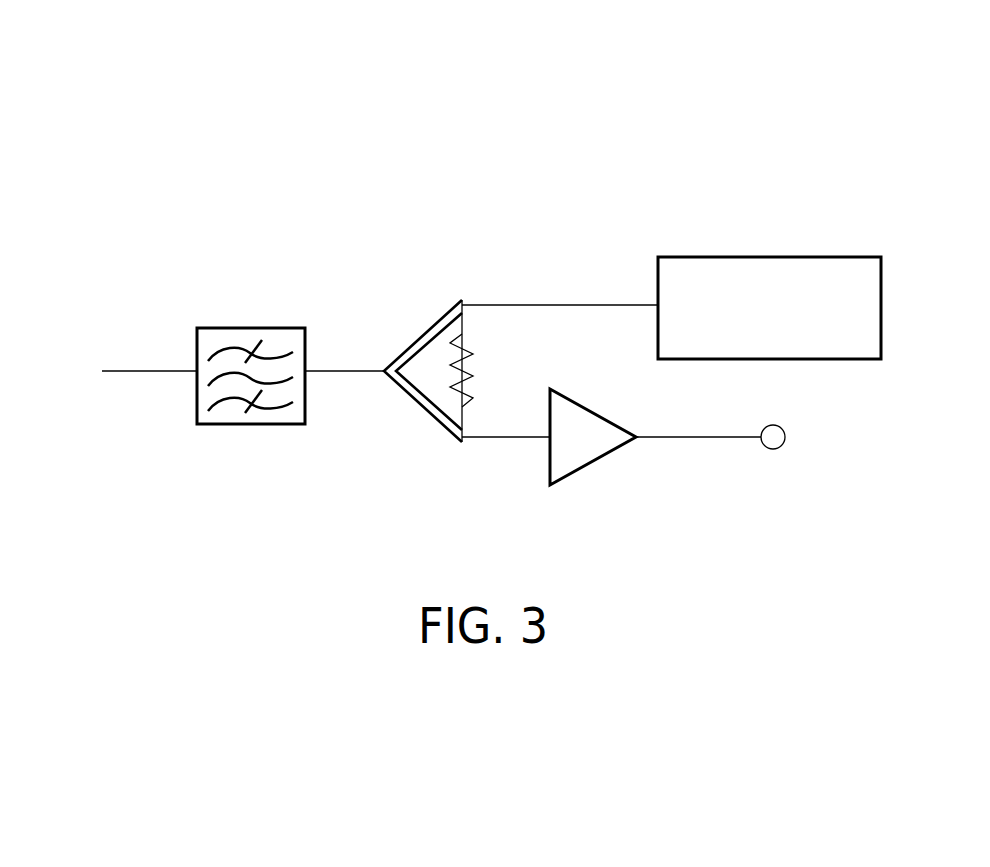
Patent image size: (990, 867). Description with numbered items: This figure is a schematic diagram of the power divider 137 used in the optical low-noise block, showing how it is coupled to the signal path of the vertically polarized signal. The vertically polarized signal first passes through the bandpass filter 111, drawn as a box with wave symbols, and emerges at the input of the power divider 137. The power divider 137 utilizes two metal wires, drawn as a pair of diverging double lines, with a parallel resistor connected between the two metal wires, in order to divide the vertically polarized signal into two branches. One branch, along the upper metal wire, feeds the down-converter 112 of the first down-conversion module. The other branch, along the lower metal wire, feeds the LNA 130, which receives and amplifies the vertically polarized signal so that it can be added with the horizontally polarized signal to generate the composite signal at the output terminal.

The power divider 137 is at (757, 128).
The bandpass filter 111 is at (245, 328).
The LNA 130 is at (595, 412).
The down-converter 112 is at (882, 308).